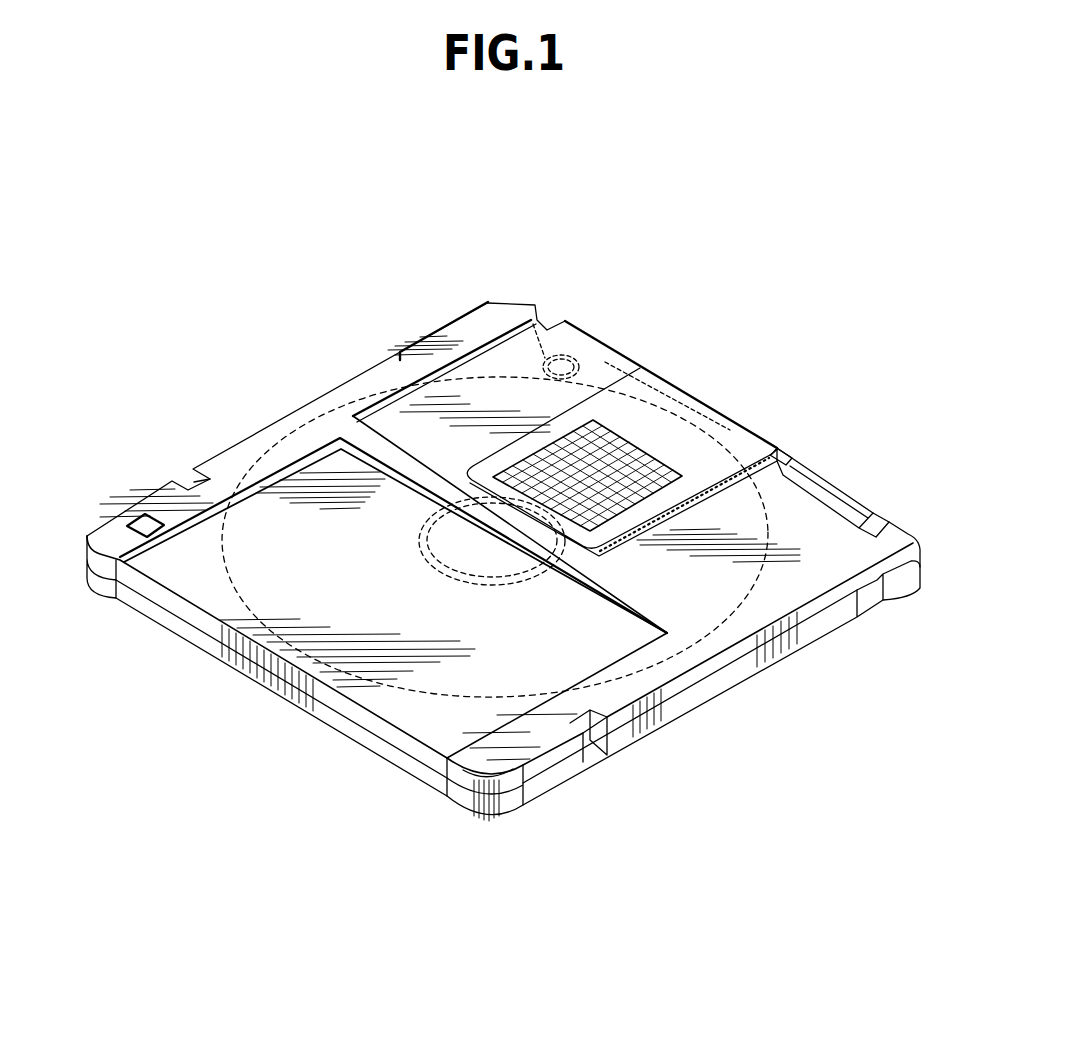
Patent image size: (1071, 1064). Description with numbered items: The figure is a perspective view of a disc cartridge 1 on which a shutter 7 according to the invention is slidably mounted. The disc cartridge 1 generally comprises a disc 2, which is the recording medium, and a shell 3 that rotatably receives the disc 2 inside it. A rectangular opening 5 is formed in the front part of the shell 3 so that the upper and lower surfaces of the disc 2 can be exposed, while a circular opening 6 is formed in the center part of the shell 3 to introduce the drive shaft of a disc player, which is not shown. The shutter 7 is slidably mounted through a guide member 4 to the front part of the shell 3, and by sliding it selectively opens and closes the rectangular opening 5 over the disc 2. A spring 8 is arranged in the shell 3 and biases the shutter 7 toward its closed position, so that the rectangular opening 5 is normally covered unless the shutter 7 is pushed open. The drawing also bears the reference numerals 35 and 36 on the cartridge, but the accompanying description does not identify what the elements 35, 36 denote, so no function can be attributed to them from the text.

The disc cartridge 1 is at (251, 377).
The disc 2 is at (317, 414).
The shell 3 is at (447, 322).
The guide member 4 is at (840, 481).
The rectangular opening 5 is at (657, 395).
The circular opening 6 is at (668, 642).
The shutter 7 is at (667, 355).
The spring 8 is at (580, 366).
The display region edge 35 is at (672, 427).
The grid pattern 36 is at (676, 412).